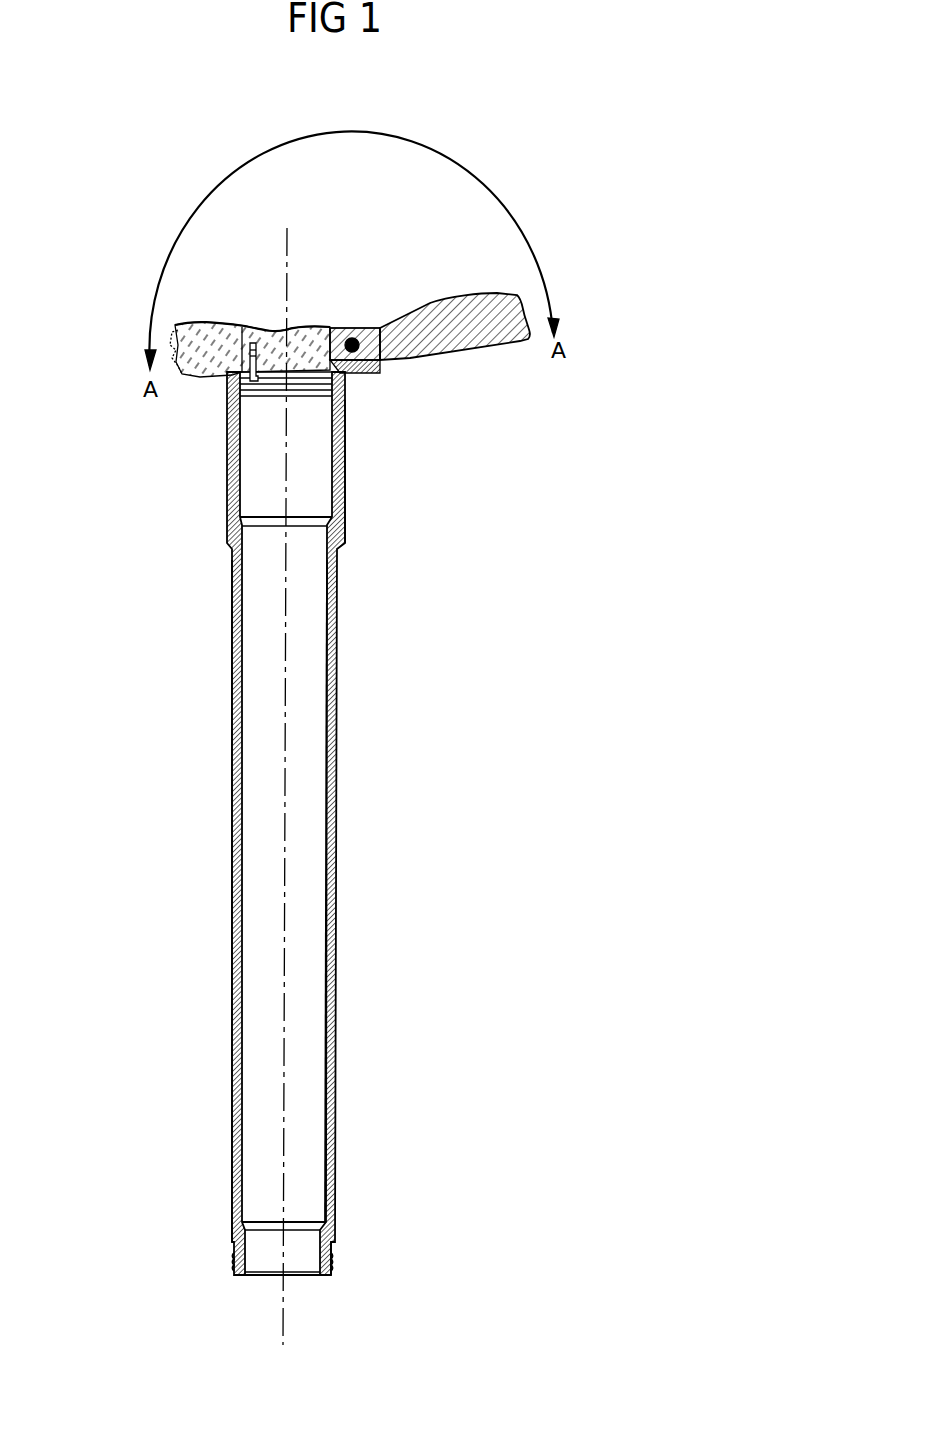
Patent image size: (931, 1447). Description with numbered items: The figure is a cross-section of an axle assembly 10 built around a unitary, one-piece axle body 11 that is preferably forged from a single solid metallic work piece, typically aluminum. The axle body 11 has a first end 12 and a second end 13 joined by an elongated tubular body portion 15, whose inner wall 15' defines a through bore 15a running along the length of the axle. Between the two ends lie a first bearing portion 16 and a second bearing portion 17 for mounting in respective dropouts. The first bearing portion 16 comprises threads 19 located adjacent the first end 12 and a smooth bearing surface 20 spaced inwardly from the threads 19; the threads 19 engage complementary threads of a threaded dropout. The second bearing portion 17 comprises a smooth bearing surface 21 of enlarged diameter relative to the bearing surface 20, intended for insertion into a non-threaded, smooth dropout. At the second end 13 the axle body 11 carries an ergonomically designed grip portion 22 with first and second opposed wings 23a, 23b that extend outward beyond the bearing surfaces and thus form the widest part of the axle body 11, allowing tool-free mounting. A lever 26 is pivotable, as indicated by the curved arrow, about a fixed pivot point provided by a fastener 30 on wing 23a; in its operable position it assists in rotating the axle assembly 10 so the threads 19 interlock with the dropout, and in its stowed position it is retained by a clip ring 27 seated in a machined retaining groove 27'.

The axle assembly 10 is at (505, 778).
The axle body 11 is at (309, 852).
The first end 12 is at (300, 1288).
The second end 13 is at (467, 333).
The tubular body portion 15 is at (223, 823).
The through bore 15a is at (268, 830).
The inner wall 15' is at (365, 891).
The first bearing portion 16 is at (325, 1226).
The second bearing portion 17 is at (358, 498).
The threads 19 is at (332, 1257).
The smooth bearing surface 20 is at (332, 1192).
The smooth bearing surface 21 is at (347, 462).
The grip portion 22 is at (341, 392).
The first wing 23a is at (351, 374).
The second wing 23b is at (220, 372).
The lever 26 is at (440, 328).
The clip ring 27 is at (218, 463).
The retaining groove 27' is at (195, 421).
The fastener 30 is at (346, 290).